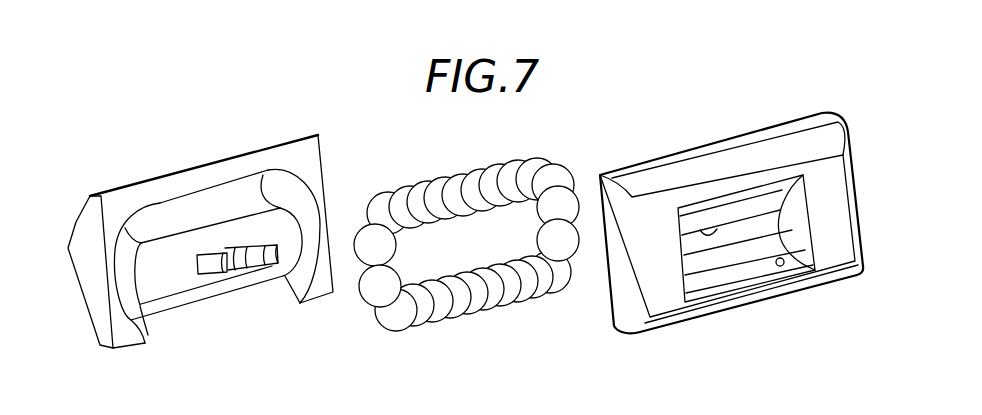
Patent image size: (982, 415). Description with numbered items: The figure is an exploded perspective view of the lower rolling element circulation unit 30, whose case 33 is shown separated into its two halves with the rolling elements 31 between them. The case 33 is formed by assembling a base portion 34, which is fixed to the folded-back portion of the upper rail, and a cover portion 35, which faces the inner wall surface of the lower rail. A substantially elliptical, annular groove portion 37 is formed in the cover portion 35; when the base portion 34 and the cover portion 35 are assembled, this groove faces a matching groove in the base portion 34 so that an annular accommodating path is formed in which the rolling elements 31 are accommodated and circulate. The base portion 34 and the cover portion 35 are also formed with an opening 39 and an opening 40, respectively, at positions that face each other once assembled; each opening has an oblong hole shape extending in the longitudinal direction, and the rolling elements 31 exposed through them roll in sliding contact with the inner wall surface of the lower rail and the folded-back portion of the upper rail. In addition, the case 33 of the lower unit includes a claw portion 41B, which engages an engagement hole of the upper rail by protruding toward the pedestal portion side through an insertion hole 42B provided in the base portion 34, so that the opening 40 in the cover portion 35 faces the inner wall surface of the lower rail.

The rolling element circulation unit 30 is at (752, 372).
The case 33 is at (295, 353).
The opening 40 is at (170, 310).
The groove portion 37 is at (172, 215).
The cover portion 35 is at (305, 303).
The claw portion 41B is at (246, 243).
The rolling element 31 is at (424, 185).
The base portion 34 is at (648, 335).
The opening 39 is at (781, 267).
The insertion hole 42B is at (710, 232).